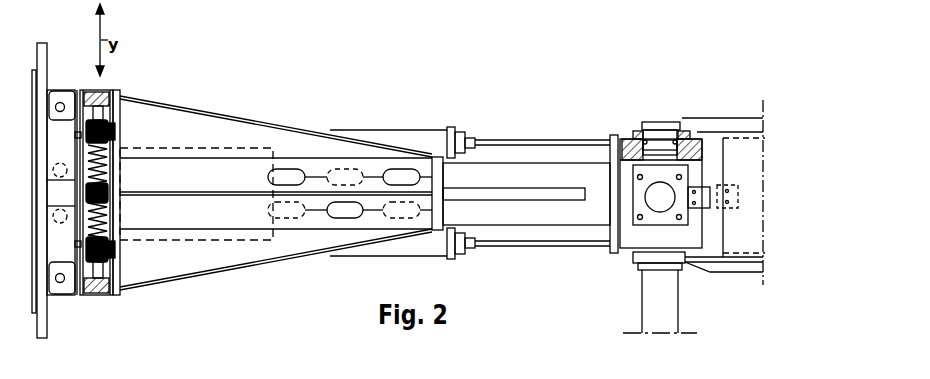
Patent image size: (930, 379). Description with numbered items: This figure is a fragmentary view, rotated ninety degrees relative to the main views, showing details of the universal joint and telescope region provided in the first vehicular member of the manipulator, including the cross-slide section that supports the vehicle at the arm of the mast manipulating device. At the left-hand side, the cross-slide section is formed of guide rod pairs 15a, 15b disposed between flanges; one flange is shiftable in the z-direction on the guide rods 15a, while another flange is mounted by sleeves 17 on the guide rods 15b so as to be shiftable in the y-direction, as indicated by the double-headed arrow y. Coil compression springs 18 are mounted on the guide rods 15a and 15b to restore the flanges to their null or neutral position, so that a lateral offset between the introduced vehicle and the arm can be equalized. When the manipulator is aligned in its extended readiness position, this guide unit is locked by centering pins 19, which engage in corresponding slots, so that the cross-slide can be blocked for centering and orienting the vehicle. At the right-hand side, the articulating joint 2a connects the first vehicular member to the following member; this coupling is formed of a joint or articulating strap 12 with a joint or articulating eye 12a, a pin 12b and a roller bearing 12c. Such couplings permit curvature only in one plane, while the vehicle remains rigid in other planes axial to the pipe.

The joint or articulating strap 12 is at (739, 124).
The joint or articulating eye 12a is at (636, 134).
The pin 12b is at (661, 130).
The roller bearing 12c is at (701, 157).
The joint 2a is at (686, 132).
The guide rods 15a is at (61, 100).
The guide rods 15b is at (97, 210).
The sleeves 17 is at (111, 124).
The coil compression springs 18 is at (106, 158).
The centering pins 19 is at (108, 191).